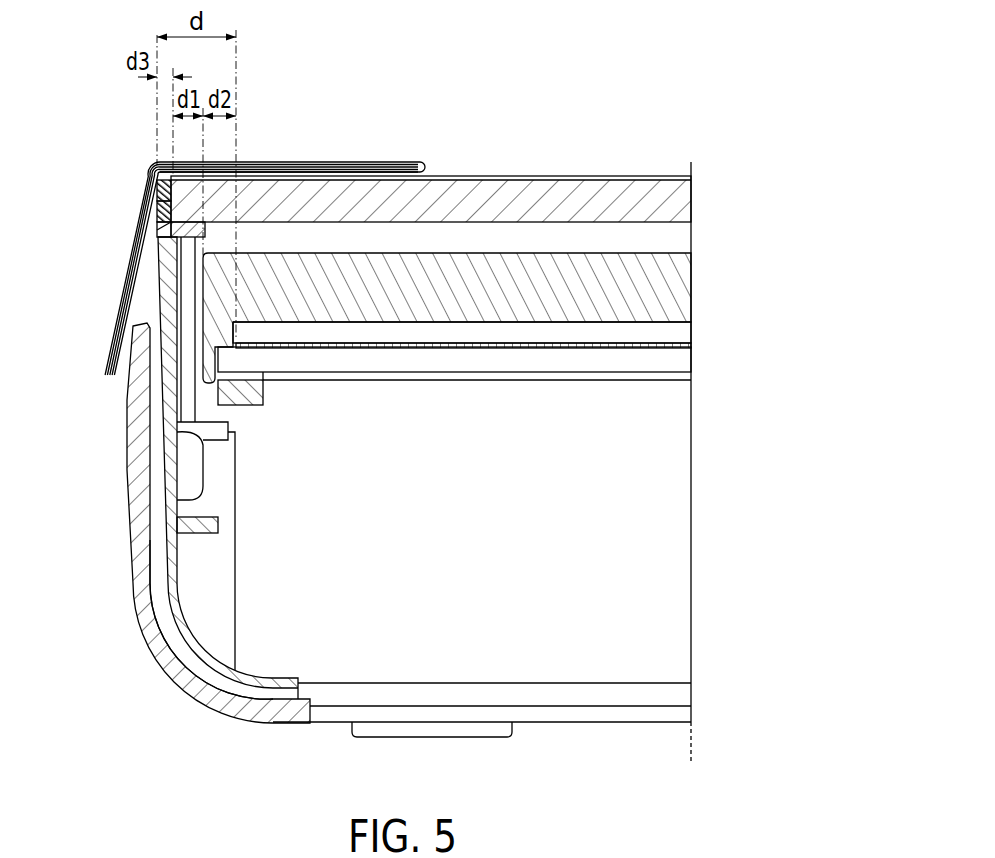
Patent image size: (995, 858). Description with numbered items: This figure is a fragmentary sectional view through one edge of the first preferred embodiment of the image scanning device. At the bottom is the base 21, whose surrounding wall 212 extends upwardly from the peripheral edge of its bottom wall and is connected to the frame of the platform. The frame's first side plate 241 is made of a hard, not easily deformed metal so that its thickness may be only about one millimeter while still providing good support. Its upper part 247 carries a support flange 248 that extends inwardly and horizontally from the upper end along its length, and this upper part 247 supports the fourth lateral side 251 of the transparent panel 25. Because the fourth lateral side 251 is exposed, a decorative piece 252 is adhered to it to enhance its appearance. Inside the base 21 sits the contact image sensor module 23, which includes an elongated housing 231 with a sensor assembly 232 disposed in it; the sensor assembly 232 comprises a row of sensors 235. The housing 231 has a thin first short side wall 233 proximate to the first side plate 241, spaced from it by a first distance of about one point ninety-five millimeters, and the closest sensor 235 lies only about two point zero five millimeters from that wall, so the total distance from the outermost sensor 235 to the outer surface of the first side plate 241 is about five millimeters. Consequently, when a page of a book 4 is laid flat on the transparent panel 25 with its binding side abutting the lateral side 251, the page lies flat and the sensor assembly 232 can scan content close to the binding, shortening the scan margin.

The book 4 is at (386, 160).
The transparent panel 25 is at (648, 198).
The decorative piece 252 is at (158, 188).
The fourth lateral side 251 is at (160, 209).
The upper part 247 is at (158, 231).
The support flange 248 is at (205, 231).
The first side plate 241 is at (160, 320).
The elongated housing 231 is at (665, 315).
The first short side wall 233 is at (212, 325).
The sensor assembly 232 is at (665, 332).
The sensors 235 is at (238, 343).
The contact image sensor module 23 is at (205, 397).
The base 21 is at (125, 539).
The surrounding wall 212 is at (140, 577).